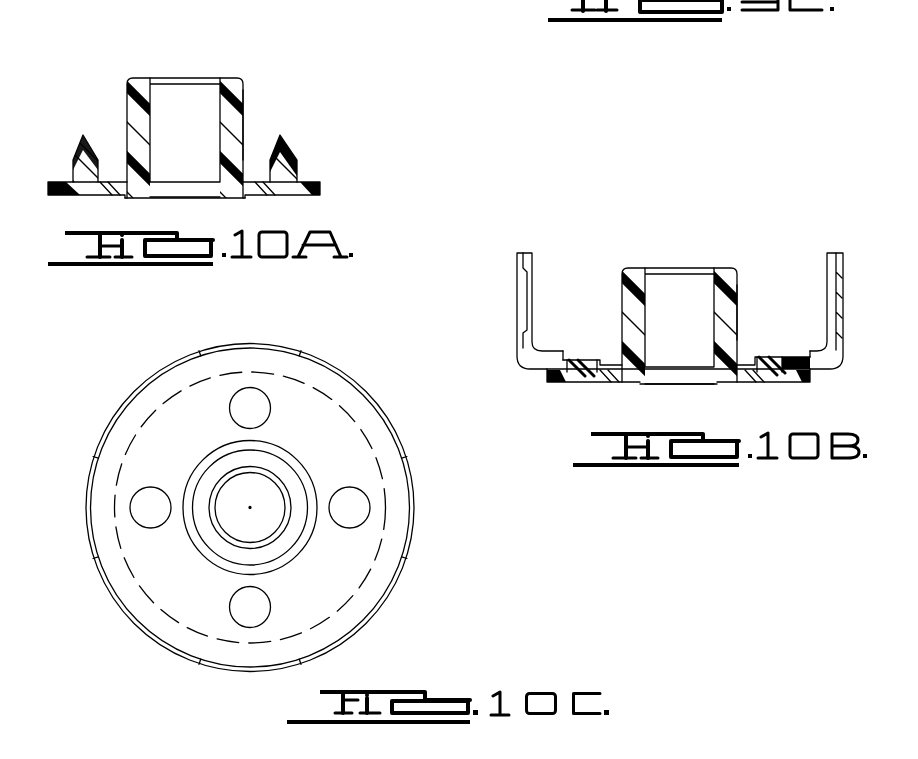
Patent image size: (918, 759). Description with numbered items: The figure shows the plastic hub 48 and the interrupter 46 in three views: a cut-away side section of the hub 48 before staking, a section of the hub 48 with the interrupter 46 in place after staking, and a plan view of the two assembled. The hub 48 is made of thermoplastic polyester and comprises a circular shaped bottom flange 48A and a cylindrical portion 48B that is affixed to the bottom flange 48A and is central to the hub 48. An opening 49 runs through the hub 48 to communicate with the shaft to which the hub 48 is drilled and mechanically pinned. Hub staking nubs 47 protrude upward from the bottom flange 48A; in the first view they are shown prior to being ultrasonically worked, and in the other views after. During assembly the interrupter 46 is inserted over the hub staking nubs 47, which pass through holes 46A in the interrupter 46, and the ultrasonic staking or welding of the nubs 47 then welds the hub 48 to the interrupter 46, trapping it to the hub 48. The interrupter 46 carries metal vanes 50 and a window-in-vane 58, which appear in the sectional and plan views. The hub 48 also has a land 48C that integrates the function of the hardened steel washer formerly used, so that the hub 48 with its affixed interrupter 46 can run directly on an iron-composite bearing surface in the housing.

In FIG. 10B, the interrupter 46 is at (523, 373).
In FIG. 10B, the holes in interrupter 46A is at (583, 372).
In FIG. 10A, the hub staking nubs 47 is at (78, 152).
In FIG. 10B, the hub staking nubs 47 is at (582, 362).
In FIG. 10C, the hub staking nubs 47 is at (151, 497).
In FIG. 10A, the hub 48 is at (240, 78).
In FIG. 10B, the hub 48 is at (624, 268).
In FIG. 10C, the hub 48 is at (279, 467).
In FIG. 10A, the bottom flange 48A is at (307, 196).
In FIG. 10B, the bottom flange 48A is at (557, 385).
In FIG. 10A, the cylindrical portion 48B is at (244, 101).
In FIG. 10B, the cylindrical portion 48B is at (738, 283).
In FIG. 10A, the land 48C is at (125, 197).
In FIG. 10B, the land 48C is at (730, 383).
In FIG. 10A, the opening 49 is at (166, 102).
In FIG. 10B, the opening 49 is at (702, 293).
In FIG. 10C, the opening 49 is at (229, 523).
In FIG. 10C, the metal vanes 50 is at (252, 342).
In FIG. 10B, the window-in-vane 58 is at (538, 255).
In FIG. 10C, the window-in-vane 58 is at (87, 482).